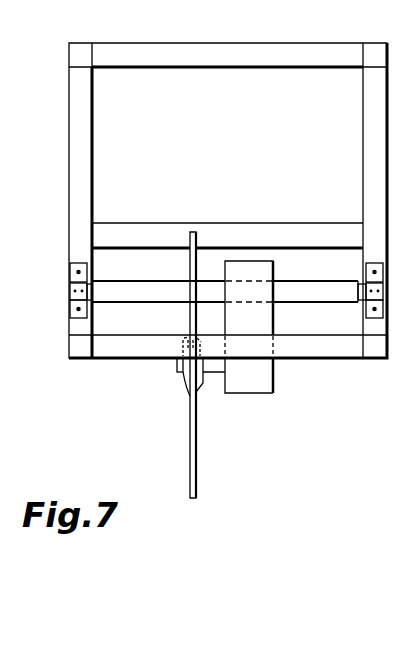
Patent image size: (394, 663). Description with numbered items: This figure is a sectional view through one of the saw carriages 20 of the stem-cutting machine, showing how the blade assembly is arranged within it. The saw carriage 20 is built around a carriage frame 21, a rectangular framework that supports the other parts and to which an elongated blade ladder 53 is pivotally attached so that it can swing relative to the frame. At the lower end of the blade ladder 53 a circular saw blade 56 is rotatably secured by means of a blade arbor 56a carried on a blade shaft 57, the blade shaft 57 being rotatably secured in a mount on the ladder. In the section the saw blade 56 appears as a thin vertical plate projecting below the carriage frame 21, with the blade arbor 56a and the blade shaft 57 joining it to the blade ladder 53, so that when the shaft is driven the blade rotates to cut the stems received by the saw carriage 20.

The saw carriage 20 is at (45, 191).
The carriage frame 21 is at (67, 258).
The blade ladder 53 is at (257, 393).
The circular saw blade 56 is at (188, 417).
The blade arbor 56a is at (182, 385).
The blade shaft 57 is at (204, 373).